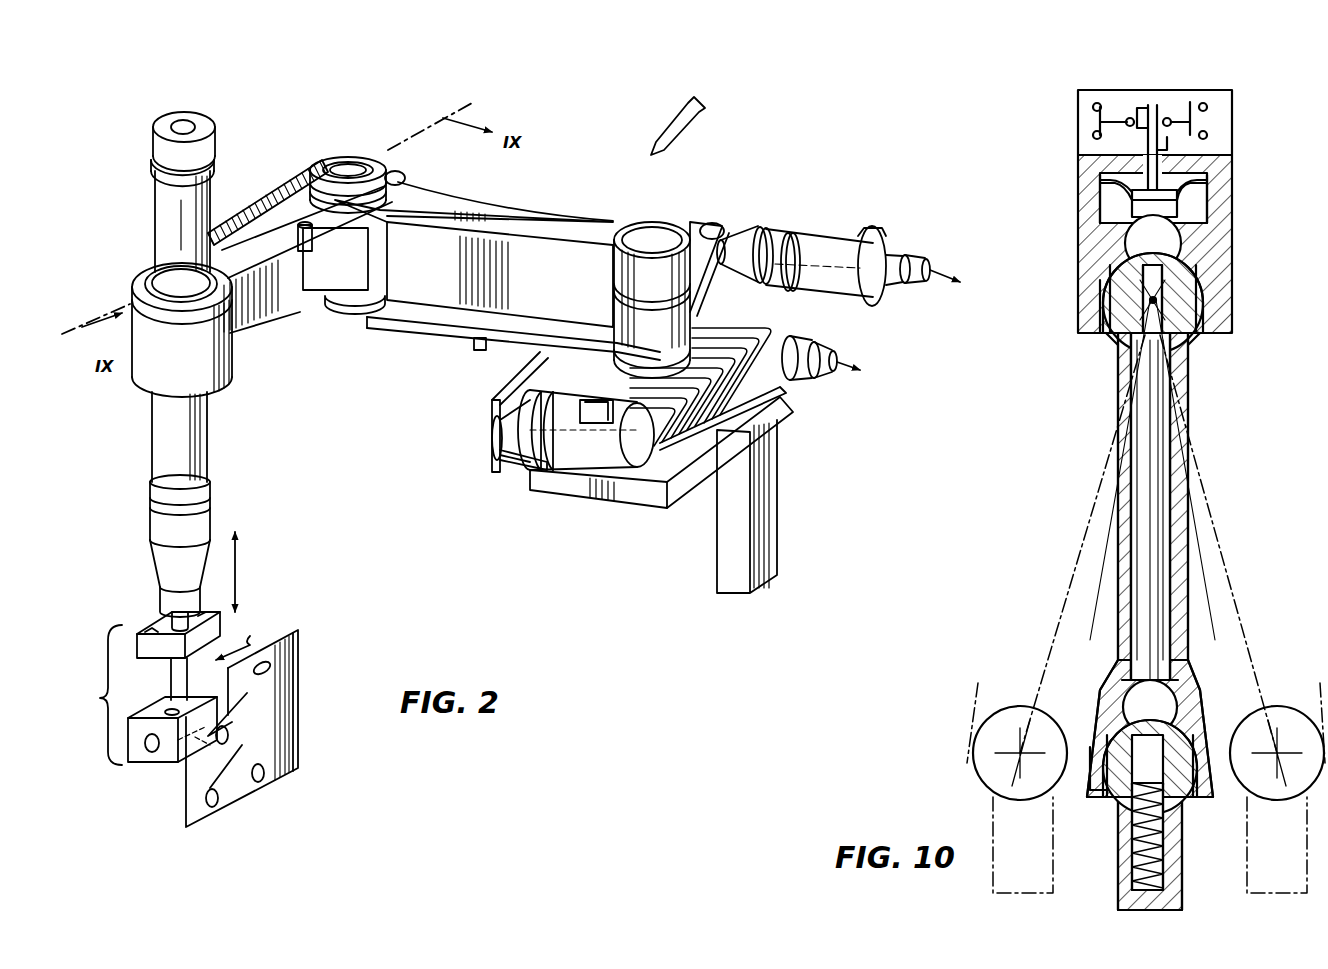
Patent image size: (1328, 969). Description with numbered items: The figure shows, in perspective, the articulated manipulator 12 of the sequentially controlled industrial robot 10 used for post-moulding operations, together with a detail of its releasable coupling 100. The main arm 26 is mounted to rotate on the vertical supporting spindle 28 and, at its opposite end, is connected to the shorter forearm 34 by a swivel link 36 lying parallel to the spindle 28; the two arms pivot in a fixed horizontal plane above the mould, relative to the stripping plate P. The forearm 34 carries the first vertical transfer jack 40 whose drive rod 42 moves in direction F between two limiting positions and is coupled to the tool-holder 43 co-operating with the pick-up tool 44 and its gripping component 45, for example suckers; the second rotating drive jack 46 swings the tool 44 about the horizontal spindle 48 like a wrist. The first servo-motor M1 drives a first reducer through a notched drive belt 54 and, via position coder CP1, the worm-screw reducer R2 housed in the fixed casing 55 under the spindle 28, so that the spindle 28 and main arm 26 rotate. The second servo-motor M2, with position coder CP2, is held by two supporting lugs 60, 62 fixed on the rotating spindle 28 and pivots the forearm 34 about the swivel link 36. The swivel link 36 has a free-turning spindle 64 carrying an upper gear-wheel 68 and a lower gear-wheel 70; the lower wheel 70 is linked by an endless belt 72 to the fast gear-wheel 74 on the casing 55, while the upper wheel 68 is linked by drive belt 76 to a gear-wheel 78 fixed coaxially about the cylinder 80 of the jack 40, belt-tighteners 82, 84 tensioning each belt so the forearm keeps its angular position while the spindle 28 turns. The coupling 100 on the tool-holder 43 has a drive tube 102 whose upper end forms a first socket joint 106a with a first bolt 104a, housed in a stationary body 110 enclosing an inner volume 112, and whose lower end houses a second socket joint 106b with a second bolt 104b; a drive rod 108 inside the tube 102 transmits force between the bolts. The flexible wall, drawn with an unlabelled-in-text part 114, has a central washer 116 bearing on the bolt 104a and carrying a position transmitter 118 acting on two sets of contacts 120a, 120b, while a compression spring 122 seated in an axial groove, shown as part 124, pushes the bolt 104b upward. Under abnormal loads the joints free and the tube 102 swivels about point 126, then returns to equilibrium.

In FIG. 2, the sequentially controlled industrial robot 10 is at (566, 188).
In FIG. 2, the articulated manipulator 12 is at (398, 366).
In FIG. 2, the main arm 26 is at (522, 215).
In FIG. 2, the supporting spindle 28 is at (660, 232).
In FIG. 2, the forearm 34 is at (244, 322).
In FIG. 2, the swivel link 36 is at (300, 137).
In FIG. 2, the first vertical transfer jack 40 is at (160, 433).
In FIG. 2, the drive rod 42 is at (170, 614).
In FIG. 2, the tool-holder 43 is at (100, 698).
In FIG. 2, the pick-up tool 44 is at (292, 663).
In FIG. 2, the gripping component 45 is at (272, 778).
In FIG. 2, the second rotating drive jack 46 is at (178, 782).
In FIG. 2, the horizontal spindle 48 is at (146, 750).
In FIG. 2, the notched drive belt 54 is at (528, 368).
In FIG. 2, the fixed casing 55 is at (697, 470).
In FIG. 2, the supporting lug 60 is at (718, 226).
In FIG. 2, the supporting lug 62 is at (709, 286).
In FIG. 2, the free-turning spindle 64 is at (345, 168).
In FIG. 2, the upper gear-wheel 68 is at (398, 172).
In FIG. 2, the lower gear-wheel 70 is at (350, 314).
In FIG. 2, the endless belt 72 is at (447, 333).
In FIG. 2, the fast gear-wheel 74 is at (640, 292).
In FIG. 2, the drive belt 76 is at (292, 180).
In FIG. 2, the gear-wheel 78 is at (155, 268).
In FIG. 2, the cylinder 80 is at (200, 430).
In FIG. 2, the belt-tightener 82 is at (480, 350).
In FIG. 2, the belt-tightener 84 is at (313, 242).
In FIG. 2, the releasable coupling 100 is at (248, 632).
In FIG. 10, the releasable coupling 100 is at (1232, 464).
In FIG. 10, the drive tube 102 is at (1165, 600).
In FIG. 10, the first bolt 104a is at (1175, 240).
In FIG. 10, the second bolt 104b is at (1177, 705).
In FIG. 10, the first socket joint 106a is at (1110, 310).
In FIG. 10, the second socket joint 106b is at (1105, 720).
In FIG. 10, the drive rod 108 is at (1153, 430).
In FIG. 10, the stationary body 110 is at (1088, 240).
In FIG. 10, the inner volume 112 is at (1104, 176).
In FIG. 10, the plate 114 is at (1190, 210).
In FIG. 10, the central washer 116 is at (1200, 180).
In FIG. 10, the position transmitter 118 is at (1160, 100).
In FIG. 10, the set of contacts 120a is at (1086, 100).
In FIG. 10, the set of contacts 120b is at (1200, 100).
In FIG. 10, the compression spring 122 is at (1137, 820).
In FIG. 10, the spring chamber 124 is at (1135, 860).
In FIG. 10, the swivel point 126 is at (1165, 302).
In FIG. 2, the first servo-motor M1 is at (585, 448).
In FIG. 2, the second servo-motor M2 is at (820, 242).
In FIG. 2, the position coder CP1 is at (828, 358).
In FIG. 2, the position coder CP2 is at (925, 265).
In FIG. 2, the second reducing gear mechanism R2 is at (735, 432).
In FIG. 2, the stripping plate P is at (678, 116).
In FIG. 2, the linear travel direction F is at (244, 572).